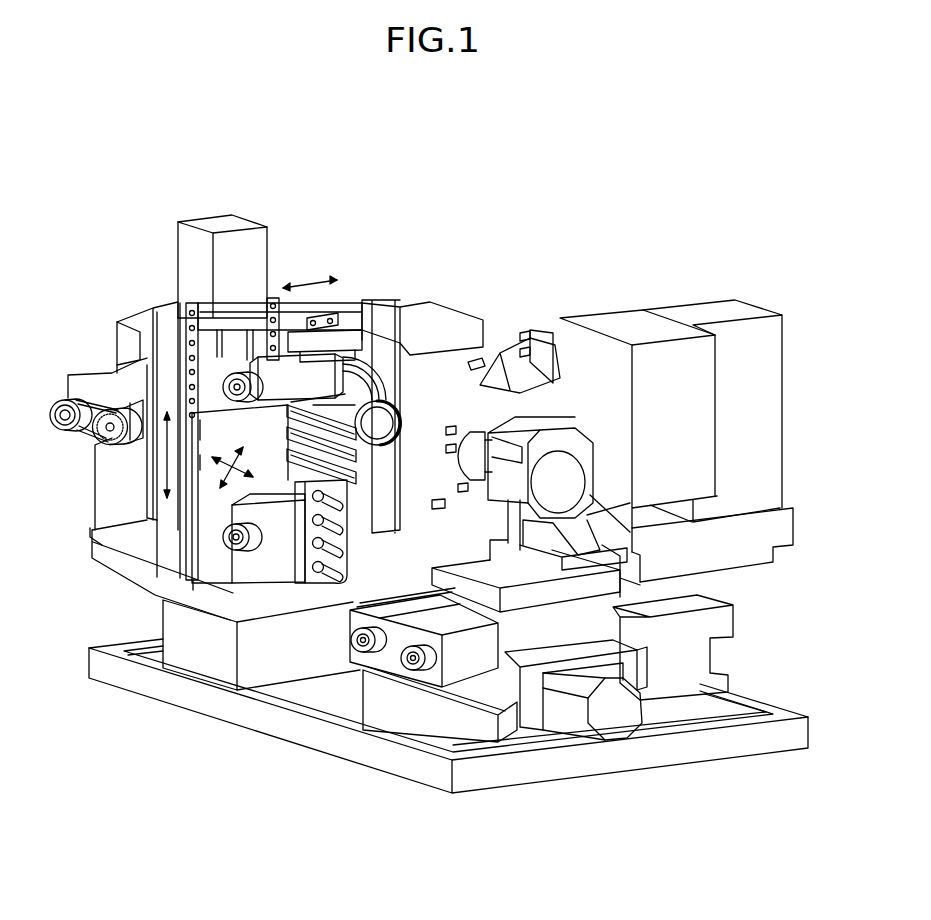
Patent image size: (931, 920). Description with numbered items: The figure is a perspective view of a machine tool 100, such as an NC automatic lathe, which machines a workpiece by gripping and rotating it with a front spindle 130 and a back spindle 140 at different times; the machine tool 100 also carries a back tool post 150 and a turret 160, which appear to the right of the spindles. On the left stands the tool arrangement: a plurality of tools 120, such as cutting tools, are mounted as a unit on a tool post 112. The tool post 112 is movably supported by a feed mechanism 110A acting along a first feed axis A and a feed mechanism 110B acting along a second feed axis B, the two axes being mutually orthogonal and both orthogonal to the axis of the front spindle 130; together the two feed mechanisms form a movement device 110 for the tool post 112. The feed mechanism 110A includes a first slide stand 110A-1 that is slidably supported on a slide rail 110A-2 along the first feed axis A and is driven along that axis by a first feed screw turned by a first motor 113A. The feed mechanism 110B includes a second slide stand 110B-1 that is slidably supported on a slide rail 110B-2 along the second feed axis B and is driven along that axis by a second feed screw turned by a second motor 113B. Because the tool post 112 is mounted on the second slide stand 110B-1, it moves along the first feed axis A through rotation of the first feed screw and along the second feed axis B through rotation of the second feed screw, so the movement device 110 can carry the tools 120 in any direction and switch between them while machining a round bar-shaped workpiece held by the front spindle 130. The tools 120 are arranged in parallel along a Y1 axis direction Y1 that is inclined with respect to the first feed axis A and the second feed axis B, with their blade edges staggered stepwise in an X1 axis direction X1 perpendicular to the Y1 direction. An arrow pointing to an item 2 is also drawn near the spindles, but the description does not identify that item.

The machine tool 100 is at (550, 228).
The movement device 110 is at (275, 260).
The feed mechanism 110A is at (337, 298).
The first slide stand 110A-1 is at (334, 316).
The slide rail 110A-2 is at (346, 328).
The feed mechanism 110B is at (168, 328).
The second slide stand 110B-1 is at (213, 572).
The slide rail 110B-2 is at (270, 306).
The tool post 112 is at (370, 406).
The first motor 113A is at (95, 378).
The second motor 113B is at (207, 240).
The tools 120 is at (392, 430).
The front spindle 130 is at (385, 416).
The back spindle 140 is at (476, 478).
The back tool post 150 is at (338, 490).
The turret 160 is at (543, 320).
The workpiece 2 is at (442, 513).
The first feed axis A is at (306, 284).
The second feed axis B is at (156, 465).
The X1 axis direction X1 is at (245, 476).
The Y1 axis direction Y1 is at (246, 455).